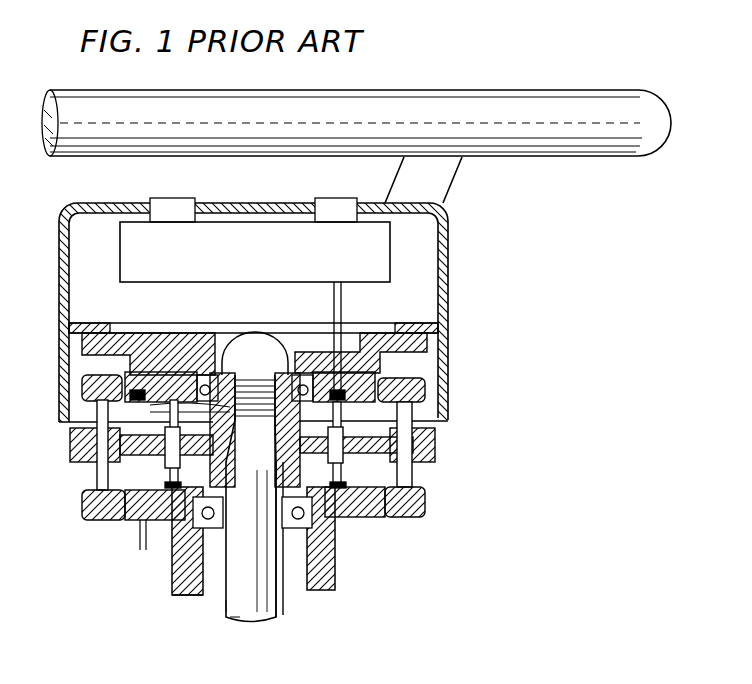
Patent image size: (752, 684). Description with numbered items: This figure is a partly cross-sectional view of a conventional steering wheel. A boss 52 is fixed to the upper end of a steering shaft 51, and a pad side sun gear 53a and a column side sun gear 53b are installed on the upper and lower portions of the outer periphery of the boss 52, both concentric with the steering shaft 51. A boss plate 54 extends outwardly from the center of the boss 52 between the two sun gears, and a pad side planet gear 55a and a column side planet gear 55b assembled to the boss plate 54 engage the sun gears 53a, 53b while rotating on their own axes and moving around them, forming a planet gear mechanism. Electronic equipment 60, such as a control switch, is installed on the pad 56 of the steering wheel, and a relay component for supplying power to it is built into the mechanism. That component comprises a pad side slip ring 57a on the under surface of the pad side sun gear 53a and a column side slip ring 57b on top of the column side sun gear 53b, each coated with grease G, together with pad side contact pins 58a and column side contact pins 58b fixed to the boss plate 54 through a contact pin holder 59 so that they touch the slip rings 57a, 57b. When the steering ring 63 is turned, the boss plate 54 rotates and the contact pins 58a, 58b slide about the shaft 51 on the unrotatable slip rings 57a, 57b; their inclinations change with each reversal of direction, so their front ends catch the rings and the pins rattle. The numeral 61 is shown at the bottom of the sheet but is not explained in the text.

The steering shaft 51 is at (262, 620).
The boss 52 is at (288, 480).
The pad side sun gear 53a is at (383, 365).
The column side sun gear 53b is at (368, 513).
The boss plate 54 is at (317, 597).
The pad side planet gear 55a is at (418, 386).
The column side planet gear 55b is at (415, 513).
The pad 56 is at (447, 246).
The pad side slip ring 57a is at (140, 405).
The column side slip ring 57b is at (165, 520).
The pad side contact pin 58a is at (72, 430).
The column side contact pin 58b is at (193, 595).
The contact pin holder 59 is at (72, 450).
The electronic equipment 60 is at (122, 250).
The base 61 is at (559, 679).
The steering ring 63 is at (559, 103).
The grease G is at (170, 407).